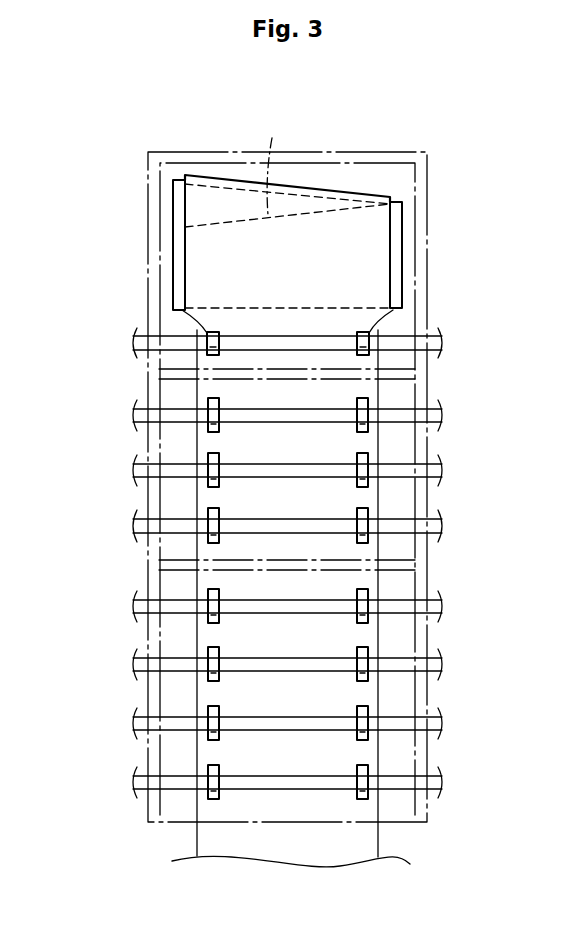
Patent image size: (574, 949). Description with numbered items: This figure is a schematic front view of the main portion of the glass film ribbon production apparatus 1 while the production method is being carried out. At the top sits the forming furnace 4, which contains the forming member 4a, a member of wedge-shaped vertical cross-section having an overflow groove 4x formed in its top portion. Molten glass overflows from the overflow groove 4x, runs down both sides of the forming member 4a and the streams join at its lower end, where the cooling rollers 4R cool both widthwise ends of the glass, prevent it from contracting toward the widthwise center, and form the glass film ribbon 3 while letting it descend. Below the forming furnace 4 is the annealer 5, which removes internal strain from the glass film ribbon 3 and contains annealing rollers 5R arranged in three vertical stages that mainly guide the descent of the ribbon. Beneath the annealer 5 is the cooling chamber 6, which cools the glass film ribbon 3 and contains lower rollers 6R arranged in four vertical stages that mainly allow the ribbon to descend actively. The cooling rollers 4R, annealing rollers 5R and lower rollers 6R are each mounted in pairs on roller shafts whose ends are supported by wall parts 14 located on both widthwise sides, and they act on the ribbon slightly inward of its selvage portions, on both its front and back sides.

The glass film ribbon production apparatus 1 is at (462, 157).
The glass film ribbon 3 is at (308, 358).
The forming furnace 4 is at (280, 221).
The forming member 4a is at (178, 208).
The overflow groove 4x is at (267, 162).
The cooling rollers 4R is at (206, 332).
The annealer 5 is at (398, 432).
The annealing rollers 5R is at (212, 402).
The cooling chamber 6 is at (397, 687).
The lower rollers 6R is at (212, 593).
The wall parts 14 is at (148, 438).